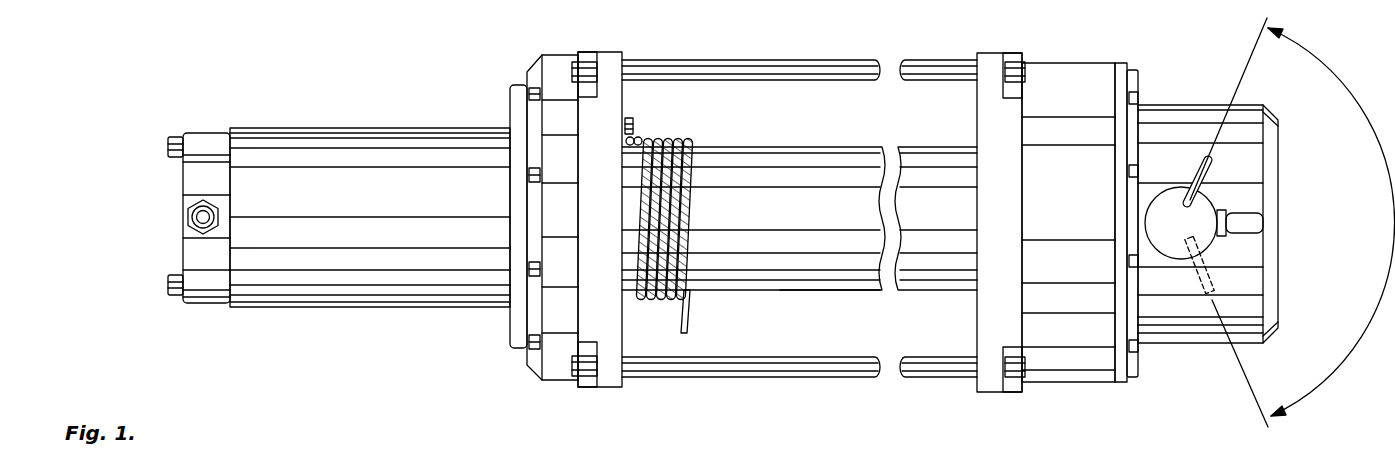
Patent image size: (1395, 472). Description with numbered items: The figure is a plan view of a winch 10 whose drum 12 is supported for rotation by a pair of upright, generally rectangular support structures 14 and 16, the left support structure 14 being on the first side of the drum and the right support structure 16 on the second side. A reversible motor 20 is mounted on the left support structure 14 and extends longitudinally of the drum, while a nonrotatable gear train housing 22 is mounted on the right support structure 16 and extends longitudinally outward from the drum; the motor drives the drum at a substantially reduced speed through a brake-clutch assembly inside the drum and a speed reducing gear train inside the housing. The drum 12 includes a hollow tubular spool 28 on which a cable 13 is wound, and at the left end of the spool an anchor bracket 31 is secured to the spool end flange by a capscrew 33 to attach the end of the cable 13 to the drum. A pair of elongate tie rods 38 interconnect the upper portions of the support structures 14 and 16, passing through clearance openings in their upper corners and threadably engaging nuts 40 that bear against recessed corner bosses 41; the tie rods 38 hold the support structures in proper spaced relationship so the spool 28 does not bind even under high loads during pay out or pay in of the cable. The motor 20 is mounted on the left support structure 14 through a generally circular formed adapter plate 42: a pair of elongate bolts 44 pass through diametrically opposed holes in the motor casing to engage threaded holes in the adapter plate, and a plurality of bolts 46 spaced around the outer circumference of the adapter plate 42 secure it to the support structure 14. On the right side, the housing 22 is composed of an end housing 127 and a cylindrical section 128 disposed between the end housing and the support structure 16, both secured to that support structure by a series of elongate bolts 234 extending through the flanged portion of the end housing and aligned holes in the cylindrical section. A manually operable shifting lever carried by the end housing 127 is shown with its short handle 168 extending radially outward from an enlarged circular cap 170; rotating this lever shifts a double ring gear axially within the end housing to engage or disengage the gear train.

The winch 10 is at (472, 51).
The drum 12 is at (798, 303).
The cable 13 is at (690, 322).
The support structure 14 is at (604, 52).
The support structure 16 is at (990, 53).
The reversible motor 20 is at (300, 128).
The gear train housing 22 is at (1168, 360).
The spool 28 is at (790, 147).
The anchor bracket 31 is at (641, 139).
The capscrew 33 is at (634, 125).
The tie rods 38 is at (722, 61).
The nuts 40 is at (582, 387).
The corner bosses 41 is at (570, 350).
The adapter plate 42 is at (530, 305).
The bolts 44 is at (168, 148).
The bolts 46 is at (530, 342).
The end housing 127 is at (1245, 350).
The cylindrical section 128 is at (1095, 390).
The handle 168 is at (1205, 182).
The cap 170 is at (1205, 245).
The bolts 234 is at (1140, 100).